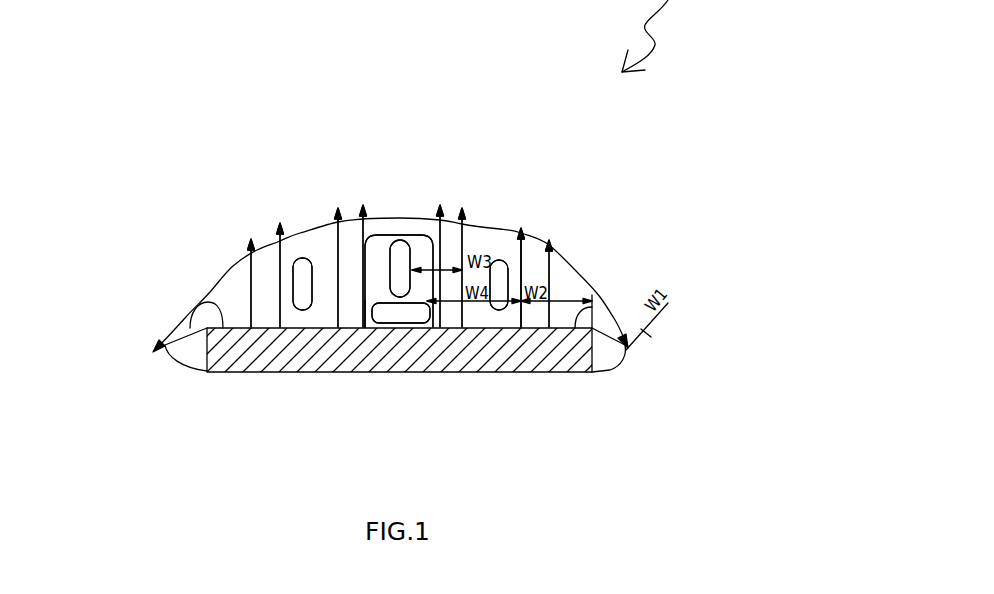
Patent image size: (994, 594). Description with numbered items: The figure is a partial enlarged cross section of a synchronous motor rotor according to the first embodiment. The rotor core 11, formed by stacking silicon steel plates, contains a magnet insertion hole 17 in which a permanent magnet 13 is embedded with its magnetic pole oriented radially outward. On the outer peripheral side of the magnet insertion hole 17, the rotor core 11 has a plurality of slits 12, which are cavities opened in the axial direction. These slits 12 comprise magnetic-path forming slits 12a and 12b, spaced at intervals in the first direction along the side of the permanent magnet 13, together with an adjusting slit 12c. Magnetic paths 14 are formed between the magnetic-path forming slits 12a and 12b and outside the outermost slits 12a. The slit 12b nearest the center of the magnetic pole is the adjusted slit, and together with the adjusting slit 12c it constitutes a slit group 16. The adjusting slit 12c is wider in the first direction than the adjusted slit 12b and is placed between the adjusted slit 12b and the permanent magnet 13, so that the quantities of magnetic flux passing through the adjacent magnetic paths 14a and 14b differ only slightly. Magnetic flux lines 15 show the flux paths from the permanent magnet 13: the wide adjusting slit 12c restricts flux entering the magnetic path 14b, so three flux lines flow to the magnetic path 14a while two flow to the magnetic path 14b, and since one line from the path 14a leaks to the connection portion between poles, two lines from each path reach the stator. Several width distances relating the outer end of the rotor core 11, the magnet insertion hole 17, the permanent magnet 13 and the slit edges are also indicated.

The rotor core 11 is at (233, 277).
The slits 12 is at (400, 281).
The magnetic-path forming slit 12a is at (303, 258).
The adjusted slit 12b is at (400, 240).
The adjusting slit 12c is at (397, 316).
The permanent magnet 13 is at (543, 373).
The magnetic paths 14 is at (400, 266).
The magnetic path 14a is at (268, 280).
The magnetic path 14b is at (347, 252).
The magnetic flux lines 15 is at (532, 238).
The slit group 16 is at (364, 330).
The magnet insertion hole 17 is at (620, 335).